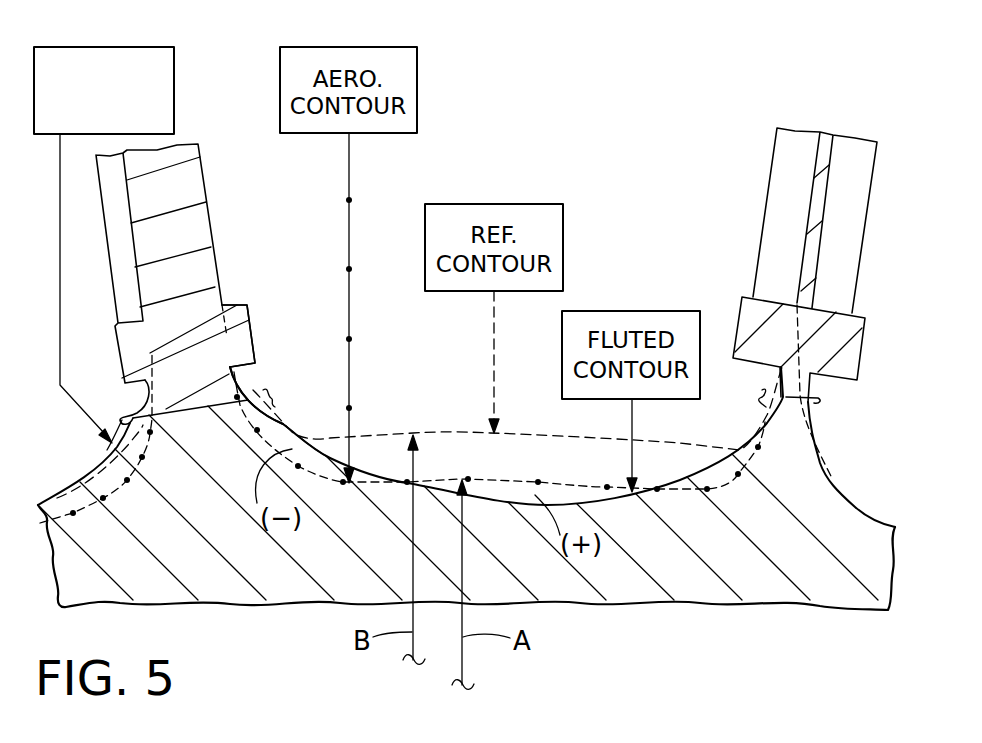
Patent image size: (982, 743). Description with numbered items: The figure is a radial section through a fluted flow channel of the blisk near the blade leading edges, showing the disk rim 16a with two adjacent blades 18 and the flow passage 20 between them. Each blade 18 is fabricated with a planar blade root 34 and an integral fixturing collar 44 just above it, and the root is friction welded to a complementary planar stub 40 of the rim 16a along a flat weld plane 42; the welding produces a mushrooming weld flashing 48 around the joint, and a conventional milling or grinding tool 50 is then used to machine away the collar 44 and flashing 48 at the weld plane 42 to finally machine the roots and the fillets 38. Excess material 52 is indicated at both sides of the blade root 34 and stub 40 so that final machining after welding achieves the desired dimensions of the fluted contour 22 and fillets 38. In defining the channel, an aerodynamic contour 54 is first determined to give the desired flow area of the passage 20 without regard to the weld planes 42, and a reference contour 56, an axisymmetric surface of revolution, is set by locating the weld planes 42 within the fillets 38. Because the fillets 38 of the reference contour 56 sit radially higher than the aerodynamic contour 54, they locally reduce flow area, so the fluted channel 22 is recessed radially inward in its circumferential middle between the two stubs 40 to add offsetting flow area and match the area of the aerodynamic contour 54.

The disk rim 16a is at (890, 593).
The blade 18 is at (207, 181).
The flow passage 20 is at (439, 352).
The fluted channel 22 is at (610, 503).
The blade root 34 is at (213, 397).
The fillet 38 is at (280, 425).
The planar stub 40 is at (231, 457).
The weld plane 42 is at (162, 420).
The fixturing collar 44 is at (230, 307).
The weld flashing 48 is at (133, 417).
The milling or grinding tool 50 is at (140, 46).
The excess material 52 is at (102, 460).
The aerodynamic contour 54 is at (323, 480).
The reference contour 56 is at (467, 432).